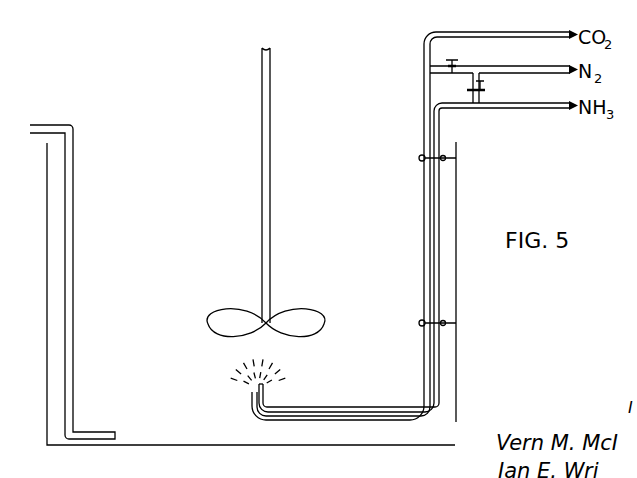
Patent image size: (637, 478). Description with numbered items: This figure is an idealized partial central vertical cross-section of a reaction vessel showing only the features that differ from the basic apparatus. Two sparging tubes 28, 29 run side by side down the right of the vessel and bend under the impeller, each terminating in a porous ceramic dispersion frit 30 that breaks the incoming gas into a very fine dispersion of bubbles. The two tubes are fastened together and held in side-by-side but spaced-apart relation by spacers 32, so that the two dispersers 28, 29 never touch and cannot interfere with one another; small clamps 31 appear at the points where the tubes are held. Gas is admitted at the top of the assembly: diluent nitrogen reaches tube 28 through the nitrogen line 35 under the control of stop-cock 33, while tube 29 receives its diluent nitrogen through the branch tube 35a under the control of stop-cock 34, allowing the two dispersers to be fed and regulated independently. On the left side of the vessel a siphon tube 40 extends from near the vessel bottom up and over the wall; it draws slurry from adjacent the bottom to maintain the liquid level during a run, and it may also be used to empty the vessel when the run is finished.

The tube 28 is at (423, 103).
The tube 29 is at (438, 124).
The dispersion frit 30 is at (270, 389).
The ring clamps 31 is at (419, 158).
The spacers 32 is at (454, 244).
The stop-cock 33 is at (454, 63).
The stop-cock 34 is at (472, 90).
The nitrogen line 35 is at (506, 66).
The tube 35a is at (484, 86).
The siphon tube 40 is at (73, 222).